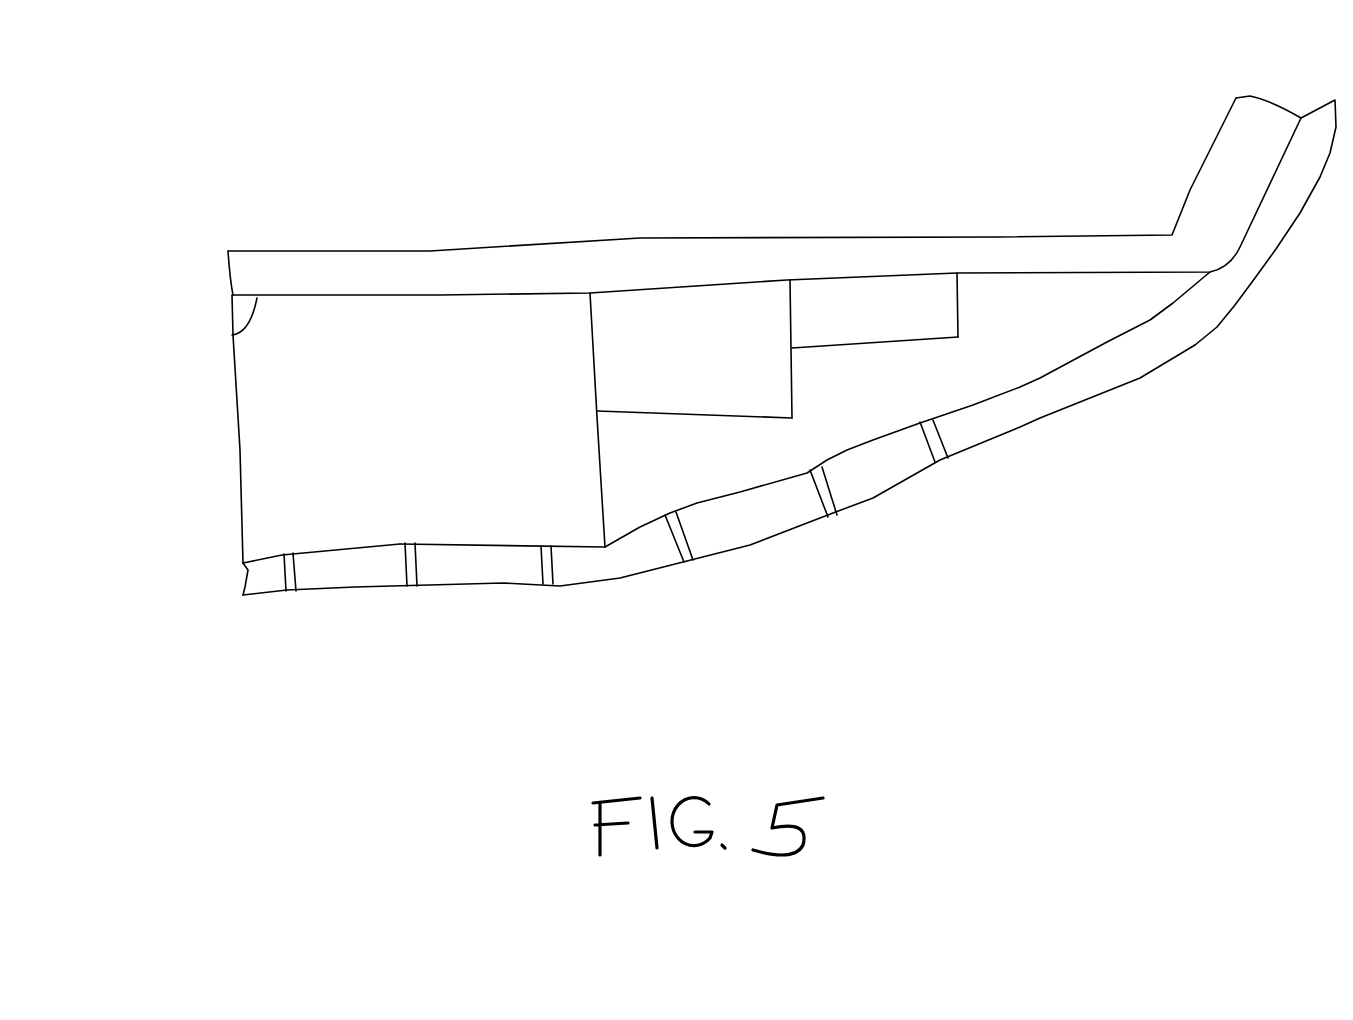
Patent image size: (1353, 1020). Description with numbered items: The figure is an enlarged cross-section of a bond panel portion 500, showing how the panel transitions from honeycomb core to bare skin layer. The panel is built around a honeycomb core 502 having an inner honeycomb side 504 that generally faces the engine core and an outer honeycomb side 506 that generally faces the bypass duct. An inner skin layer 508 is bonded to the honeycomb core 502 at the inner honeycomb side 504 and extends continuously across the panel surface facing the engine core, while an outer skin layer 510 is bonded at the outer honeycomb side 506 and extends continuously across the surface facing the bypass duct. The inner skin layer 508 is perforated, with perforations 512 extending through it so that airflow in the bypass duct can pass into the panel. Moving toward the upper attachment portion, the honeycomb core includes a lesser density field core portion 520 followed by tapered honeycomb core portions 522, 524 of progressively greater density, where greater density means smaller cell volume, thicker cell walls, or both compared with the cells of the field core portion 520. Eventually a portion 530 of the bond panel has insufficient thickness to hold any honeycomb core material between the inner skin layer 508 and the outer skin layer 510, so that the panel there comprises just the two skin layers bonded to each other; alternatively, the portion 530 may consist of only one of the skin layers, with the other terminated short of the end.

The bond panel portion 500 is at (702, 365).
The honeycomb core 502 is at (165, 429).
The inner honeycomb side 504 is at (229, 548).
The outer honeycomb side 506 is at (162, 300).
The inner skin layer 508 is at (725, 483).
The outer skin layer 510 is at (764, 196).
The perforations 512 is at (594, 557).
The field core portion 520 is at (502, 420).
The taper honeycomb core portion 522 is at (694, 349).
The taper honeycomb core portion 524 is at (875, 310).
The portion of the bond panel 530 is at (1265, 257).